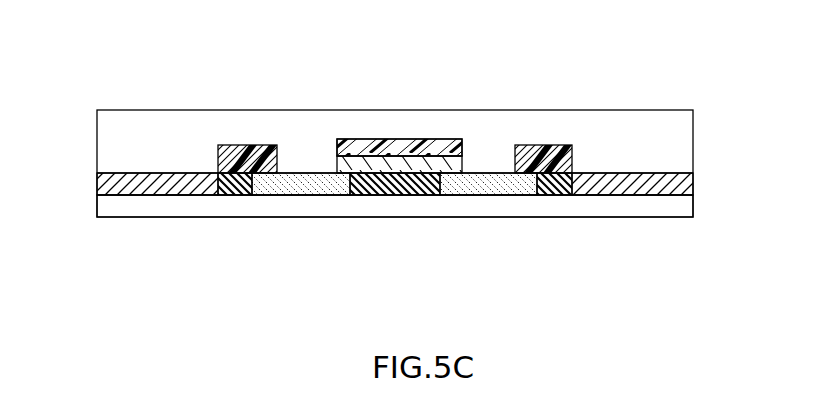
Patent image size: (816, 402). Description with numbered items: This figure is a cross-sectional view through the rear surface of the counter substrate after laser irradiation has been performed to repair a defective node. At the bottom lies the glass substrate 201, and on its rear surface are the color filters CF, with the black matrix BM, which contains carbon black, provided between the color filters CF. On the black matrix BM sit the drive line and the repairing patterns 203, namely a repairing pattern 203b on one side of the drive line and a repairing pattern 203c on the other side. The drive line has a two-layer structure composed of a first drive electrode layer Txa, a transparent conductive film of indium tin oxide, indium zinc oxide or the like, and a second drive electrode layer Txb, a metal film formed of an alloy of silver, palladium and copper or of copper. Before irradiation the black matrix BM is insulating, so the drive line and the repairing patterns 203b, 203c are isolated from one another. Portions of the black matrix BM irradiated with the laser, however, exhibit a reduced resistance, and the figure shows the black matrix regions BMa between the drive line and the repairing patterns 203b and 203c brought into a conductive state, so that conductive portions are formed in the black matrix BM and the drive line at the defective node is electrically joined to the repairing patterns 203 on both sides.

The glass substrate 201 is at (672, 205).
The color filter CF is at (103, 184).
The black matrix BM is at (404, 188).
The black matrix region BMa is at (297, 188).
The repairing pattern 203 is at (410, 120).
The repairing pattern 203b is at (249, 146).
The repairing pattern 203c is at (545, 146).
The first drive electrode layer Txa is at (421, 140).
The second drive electrode layer Txb is at (448, 162).